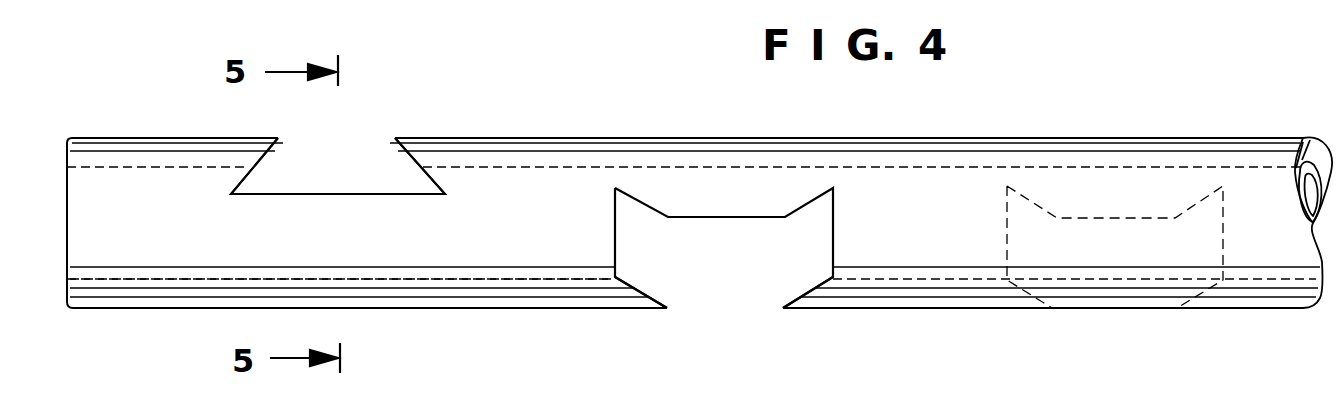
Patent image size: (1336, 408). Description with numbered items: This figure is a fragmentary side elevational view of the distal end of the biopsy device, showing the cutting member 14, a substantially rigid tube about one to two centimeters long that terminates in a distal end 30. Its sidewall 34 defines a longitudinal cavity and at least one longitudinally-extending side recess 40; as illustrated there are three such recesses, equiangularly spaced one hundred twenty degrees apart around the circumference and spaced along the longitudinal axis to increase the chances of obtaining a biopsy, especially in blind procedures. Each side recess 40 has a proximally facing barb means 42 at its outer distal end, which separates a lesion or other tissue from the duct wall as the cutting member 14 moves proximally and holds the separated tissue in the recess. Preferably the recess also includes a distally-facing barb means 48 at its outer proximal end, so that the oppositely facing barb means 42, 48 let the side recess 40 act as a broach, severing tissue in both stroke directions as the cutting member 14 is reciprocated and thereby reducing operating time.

The cutting member 14 is at (1201, 134).
The distal end 30 is at (67, 250).
The sidewall 34 is at (483, 281).
The side recess 40 is at (372, 195).
The proximally facing barb means 42 is at (650, 295).
The distally-facing barb means 48 is at (800, 295).